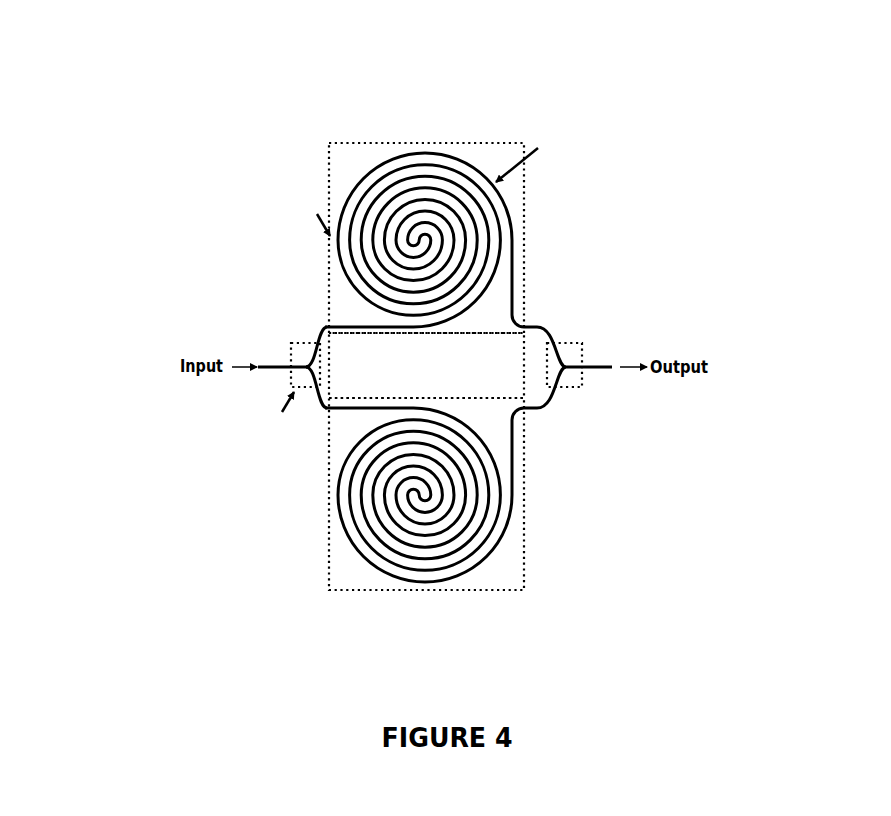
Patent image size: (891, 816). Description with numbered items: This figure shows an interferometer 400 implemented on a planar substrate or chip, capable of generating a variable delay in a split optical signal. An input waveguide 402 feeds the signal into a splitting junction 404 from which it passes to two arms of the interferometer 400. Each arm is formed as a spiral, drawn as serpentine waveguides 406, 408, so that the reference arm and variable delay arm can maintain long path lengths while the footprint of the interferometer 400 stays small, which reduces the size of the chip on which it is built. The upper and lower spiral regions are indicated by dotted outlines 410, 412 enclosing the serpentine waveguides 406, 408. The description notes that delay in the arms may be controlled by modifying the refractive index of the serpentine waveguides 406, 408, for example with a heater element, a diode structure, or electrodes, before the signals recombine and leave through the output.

The interferometer 400 is at (707, 287).
The input waveguide 402 is at (205, 378).
The input splitter junction 404 is at (308, 368).
The serpentine waveguide 406 is at (443, 195).
The serpentine waveguide 408 is at (445, 518).
The first spiral region 410 is at (532, 227).
The second spiral region 412 is at (527, 505).